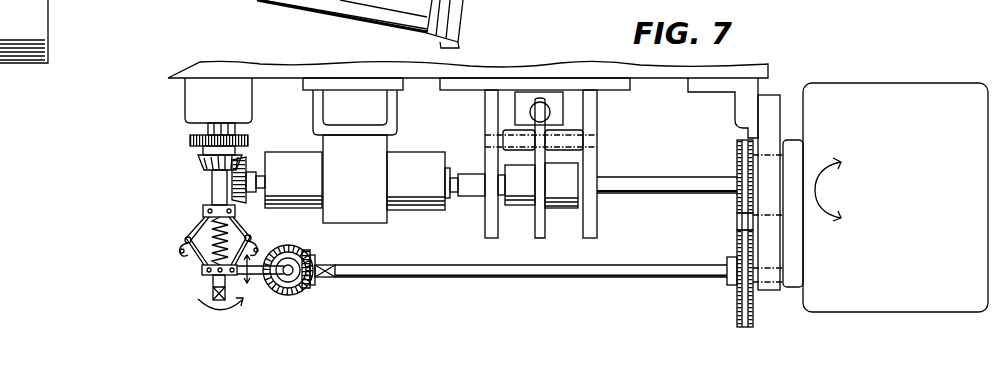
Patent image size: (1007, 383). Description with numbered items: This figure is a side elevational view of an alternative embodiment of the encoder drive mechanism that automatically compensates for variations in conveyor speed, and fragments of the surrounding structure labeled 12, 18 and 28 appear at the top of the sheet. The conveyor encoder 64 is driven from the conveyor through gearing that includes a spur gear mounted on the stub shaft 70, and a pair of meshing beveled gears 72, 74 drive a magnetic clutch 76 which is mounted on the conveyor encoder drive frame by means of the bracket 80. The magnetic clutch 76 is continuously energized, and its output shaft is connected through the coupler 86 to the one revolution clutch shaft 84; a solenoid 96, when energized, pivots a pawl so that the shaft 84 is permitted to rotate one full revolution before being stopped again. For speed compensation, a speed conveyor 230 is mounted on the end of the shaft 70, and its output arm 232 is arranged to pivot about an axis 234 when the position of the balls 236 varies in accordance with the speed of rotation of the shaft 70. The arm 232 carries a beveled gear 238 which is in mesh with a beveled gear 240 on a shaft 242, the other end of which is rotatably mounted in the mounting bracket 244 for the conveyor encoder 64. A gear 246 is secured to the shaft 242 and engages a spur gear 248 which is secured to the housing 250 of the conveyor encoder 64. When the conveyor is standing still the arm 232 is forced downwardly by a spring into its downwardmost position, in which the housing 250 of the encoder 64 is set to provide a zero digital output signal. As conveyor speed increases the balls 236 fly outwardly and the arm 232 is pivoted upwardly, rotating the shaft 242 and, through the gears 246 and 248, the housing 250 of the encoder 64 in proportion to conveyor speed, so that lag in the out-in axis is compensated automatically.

The base frame 12 is at (105, 0).
The support 18 is at (210, 0).
The arm 28 is at (283, 0).
The conveyor encoder 64 is at (835, 108).
The stub shaft 70 is at (208, 129).
The beveled gear 72 is at (205, 165).
The beveled gear 74 is at (244, 170).
The magnetic clutch 76 is at (413, 158).
The bracket 80 is at (394, 113).
The one revolution clutch shaft 84 is at (583, 186).
The coupler 86 is at (472, 177).
The solenoid 96 is at (541, 100).
The speed conveyor 230 is at (189, 218).
The output arm 232 is at (254, 283).
The axis 234 is at (280, 248).
The balls 236 is at (178, 250).
The beveled gear 238 is at (305, 290).
The beveled gear 240 is at (312, 258).
The shaft 242 is at (405, 274).
The mounting bracket 244 is at (768, 110).
The gear 246 is at (740, 305).
The spur gear 248 is at (740, 222).
The housing 250 is at (740, 163).